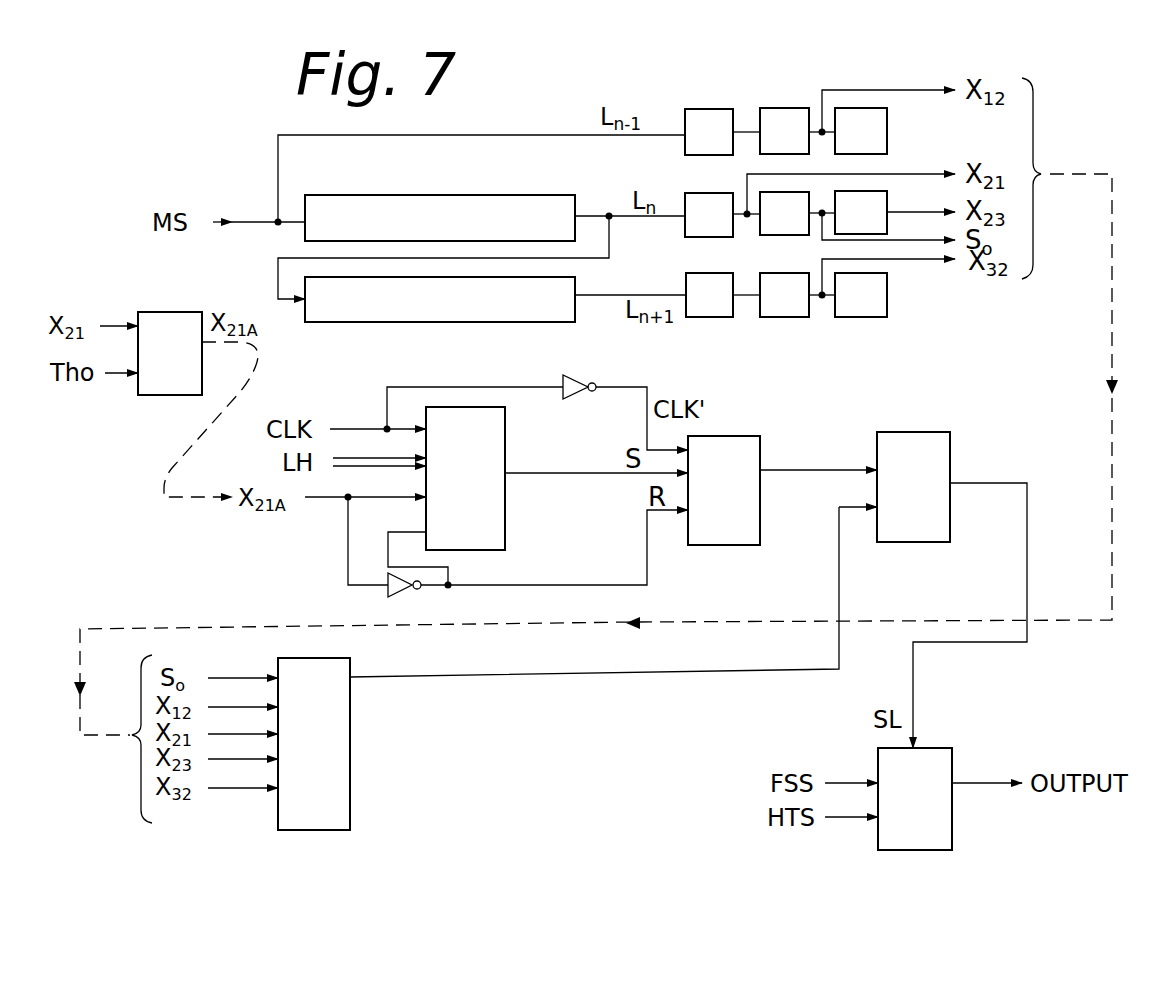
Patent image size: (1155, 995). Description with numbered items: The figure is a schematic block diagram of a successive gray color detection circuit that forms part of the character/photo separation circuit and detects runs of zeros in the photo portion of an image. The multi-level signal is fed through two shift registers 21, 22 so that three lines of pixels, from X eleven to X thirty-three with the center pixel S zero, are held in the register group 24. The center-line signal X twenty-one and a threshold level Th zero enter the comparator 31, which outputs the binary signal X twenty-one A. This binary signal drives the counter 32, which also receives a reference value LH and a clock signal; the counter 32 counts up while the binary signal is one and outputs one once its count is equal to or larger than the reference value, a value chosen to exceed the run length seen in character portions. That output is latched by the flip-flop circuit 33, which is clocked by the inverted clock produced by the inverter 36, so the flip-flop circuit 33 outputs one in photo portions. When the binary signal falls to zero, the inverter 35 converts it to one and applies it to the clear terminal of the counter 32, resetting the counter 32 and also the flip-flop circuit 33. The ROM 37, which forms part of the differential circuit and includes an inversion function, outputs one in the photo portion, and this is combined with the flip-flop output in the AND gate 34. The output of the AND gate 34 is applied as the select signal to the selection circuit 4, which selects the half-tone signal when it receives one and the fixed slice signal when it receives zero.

The selection circuit 4 is at (952, 760).
The shift register 21 is at (492, 195).
The shift register 22 is at (575, 284).
The register group 24 is at (790, 77).
The comparator 31 is at (192, 312).
The counter 32 is at (505, 432).
The flip-flop circuit 33 is at (762, 450).
The AND gate 34 is at (950, 448).
The inverter 35 is at (400, 595).
The inverter 36 is at (585, 378).
The ROM 37 is at (352, 800).